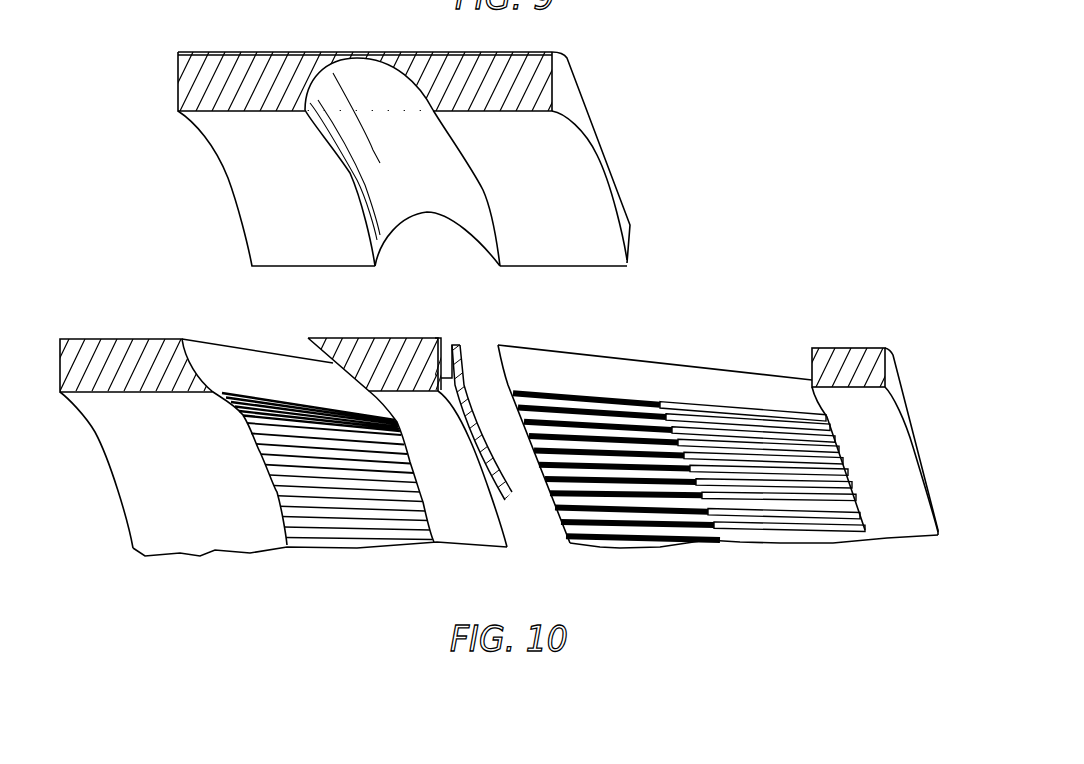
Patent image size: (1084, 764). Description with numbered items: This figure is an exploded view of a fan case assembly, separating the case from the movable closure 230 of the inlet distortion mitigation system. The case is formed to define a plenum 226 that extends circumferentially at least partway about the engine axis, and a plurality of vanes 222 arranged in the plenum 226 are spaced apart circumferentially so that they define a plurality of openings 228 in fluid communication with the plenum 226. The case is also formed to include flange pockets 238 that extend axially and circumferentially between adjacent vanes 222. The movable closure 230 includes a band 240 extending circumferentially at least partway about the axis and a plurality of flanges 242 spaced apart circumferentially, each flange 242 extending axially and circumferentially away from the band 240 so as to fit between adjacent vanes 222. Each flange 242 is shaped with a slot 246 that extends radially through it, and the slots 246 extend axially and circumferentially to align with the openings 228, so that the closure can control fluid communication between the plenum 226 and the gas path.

In FIG. 10, the vanes 222 is at (387, 503).
In FIG. 9, the plenum 226 is at (345, 101).
In FIG. 10, the openings 228 is at (343, 490).
In FIG. 10, the movable closure 230 is at (668, 336).
In FIG. 10, the flange pockets 238 is at (478, 382).
In FIG. 10, the band 240 is at (900, 357).
In FIG. 9, the flanges 242 is at (797, 0).
In FIG. 10, the flanges 242 is at (753, 483).
In FIG. 9, the slots 246 is at (634, 10).
In FIG. 10, the slots 246 is at (643, 493).